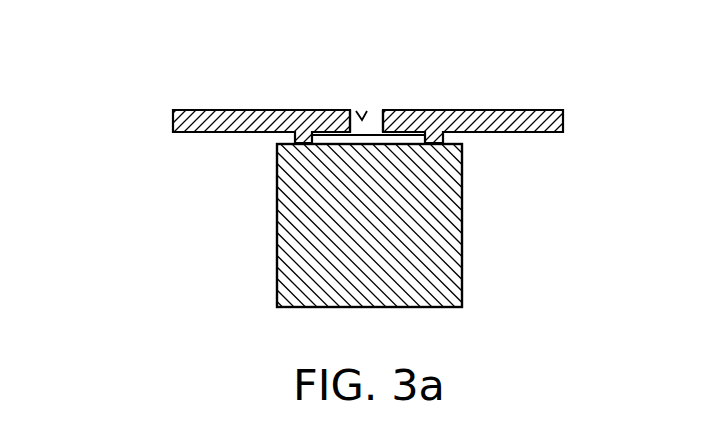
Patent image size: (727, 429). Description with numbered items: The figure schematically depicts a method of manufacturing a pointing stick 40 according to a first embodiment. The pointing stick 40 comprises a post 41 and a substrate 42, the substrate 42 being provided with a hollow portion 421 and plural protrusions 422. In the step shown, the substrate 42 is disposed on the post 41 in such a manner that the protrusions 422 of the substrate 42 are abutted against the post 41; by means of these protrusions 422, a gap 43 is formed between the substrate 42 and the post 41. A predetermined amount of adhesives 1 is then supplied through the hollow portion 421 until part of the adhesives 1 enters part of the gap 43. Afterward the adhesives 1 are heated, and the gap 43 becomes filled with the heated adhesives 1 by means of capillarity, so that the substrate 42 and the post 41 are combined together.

The pointing stick 40 is at (78, 31).
The post 41 is at (435, 218).
The substrate 42 is at (385, 100).
The hollow portion 421 is at (372, 118).
The protrusion 422 is at (445, 139).
The gap 43 is at (412, 138).
The adhesives 1 is at (357, 111).